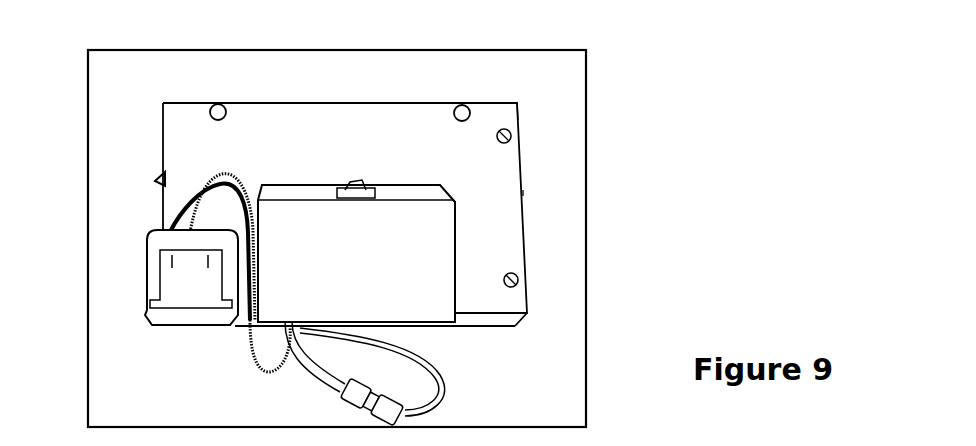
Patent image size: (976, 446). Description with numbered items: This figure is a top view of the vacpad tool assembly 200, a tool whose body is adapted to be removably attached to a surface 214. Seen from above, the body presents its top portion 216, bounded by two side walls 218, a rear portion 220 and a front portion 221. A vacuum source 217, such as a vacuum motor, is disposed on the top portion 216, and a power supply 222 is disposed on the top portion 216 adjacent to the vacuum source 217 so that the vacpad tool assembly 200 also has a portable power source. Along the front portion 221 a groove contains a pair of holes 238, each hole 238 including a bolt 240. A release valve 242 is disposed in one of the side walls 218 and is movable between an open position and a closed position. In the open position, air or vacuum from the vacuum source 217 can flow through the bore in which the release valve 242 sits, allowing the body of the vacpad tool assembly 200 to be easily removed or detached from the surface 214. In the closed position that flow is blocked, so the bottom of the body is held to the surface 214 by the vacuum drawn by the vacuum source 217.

The vacpad tool assembly 200 is at (625, 237).
The surface 214 is at (552, 323).
The top portion 216 is at (487, 178).
The vacuum source 217 is at (356, 251).
The side walls 218 is at (523, 193).
The rear portion 220 is at (485, 328).
The front portion 221 is at (500, 100).
The power supply 222 is at (145, 283).
The holes 238 is at (221, 104).
The bolt 240 is at (465, 105).
The release valve 242 is at (155, 178).